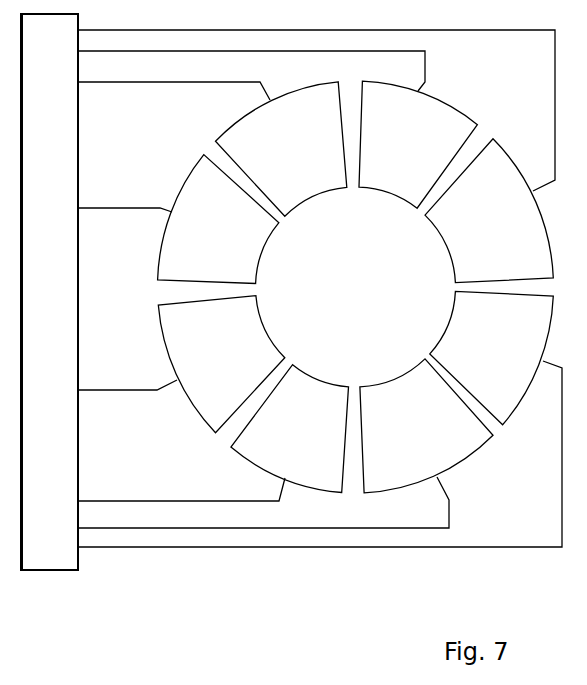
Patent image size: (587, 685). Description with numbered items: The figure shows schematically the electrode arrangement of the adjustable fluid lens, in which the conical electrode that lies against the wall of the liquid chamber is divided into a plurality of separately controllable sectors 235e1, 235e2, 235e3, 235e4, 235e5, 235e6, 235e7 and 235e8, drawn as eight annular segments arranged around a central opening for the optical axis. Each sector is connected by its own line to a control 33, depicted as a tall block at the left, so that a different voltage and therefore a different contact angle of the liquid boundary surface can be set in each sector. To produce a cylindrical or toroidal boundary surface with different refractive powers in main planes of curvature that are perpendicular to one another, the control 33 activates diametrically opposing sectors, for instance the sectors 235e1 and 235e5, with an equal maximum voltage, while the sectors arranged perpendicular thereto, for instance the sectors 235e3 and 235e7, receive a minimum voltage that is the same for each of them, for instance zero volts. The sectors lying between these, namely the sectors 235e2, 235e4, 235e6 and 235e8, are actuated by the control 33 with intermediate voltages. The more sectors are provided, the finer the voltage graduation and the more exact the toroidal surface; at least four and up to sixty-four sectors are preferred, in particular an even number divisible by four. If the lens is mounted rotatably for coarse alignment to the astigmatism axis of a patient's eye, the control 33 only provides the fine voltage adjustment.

The control 33 is at (62, 462).
The sector 235e1 is at (522, 239).
The sector 235e2 is at (428, 152).
The sector 235e3 is at (306, 159).
The sector 235e4 is at (238, 252).
The sector 235e5 is at (240, 366).
The sector 235e6 is at (325, 437).
The sector 235e7 is at (434, 447).
The sector 235e8 is at (514, 358).